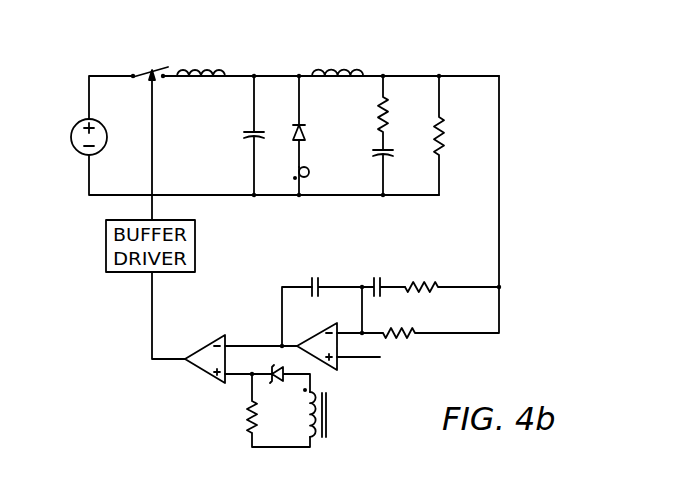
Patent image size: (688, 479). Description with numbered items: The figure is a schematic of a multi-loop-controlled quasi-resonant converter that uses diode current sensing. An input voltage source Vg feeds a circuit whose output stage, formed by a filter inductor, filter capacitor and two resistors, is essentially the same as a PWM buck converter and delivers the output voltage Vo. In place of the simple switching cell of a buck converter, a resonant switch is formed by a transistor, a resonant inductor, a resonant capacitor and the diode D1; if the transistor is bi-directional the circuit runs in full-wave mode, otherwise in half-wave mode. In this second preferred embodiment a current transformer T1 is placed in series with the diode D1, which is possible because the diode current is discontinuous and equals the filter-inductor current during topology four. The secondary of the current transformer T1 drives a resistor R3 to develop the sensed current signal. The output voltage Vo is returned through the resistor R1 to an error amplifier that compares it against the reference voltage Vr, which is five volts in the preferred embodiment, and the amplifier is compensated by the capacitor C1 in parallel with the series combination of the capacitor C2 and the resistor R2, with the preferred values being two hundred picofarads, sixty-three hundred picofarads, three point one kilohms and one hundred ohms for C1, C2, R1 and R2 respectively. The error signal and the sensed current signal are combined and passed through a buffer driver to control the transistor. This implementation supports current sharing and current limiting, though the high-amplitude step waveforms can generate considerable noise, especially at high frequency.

The input voltage source Vg is at (77, 137).
The diode D1 is at (311, 121).
The current transformer T1 is at (312, 180).
The output voltage Vo is at (461, 192).
The reference voltage Vr is at (368, 361).
The capacitor C1 is at (334, 274).
The capacitor C2 is at (383, 274).
The resistor R1 is at (418, 321).
The resistor R2 is at (452, 274).
The resistor R3 is at (261, 410).